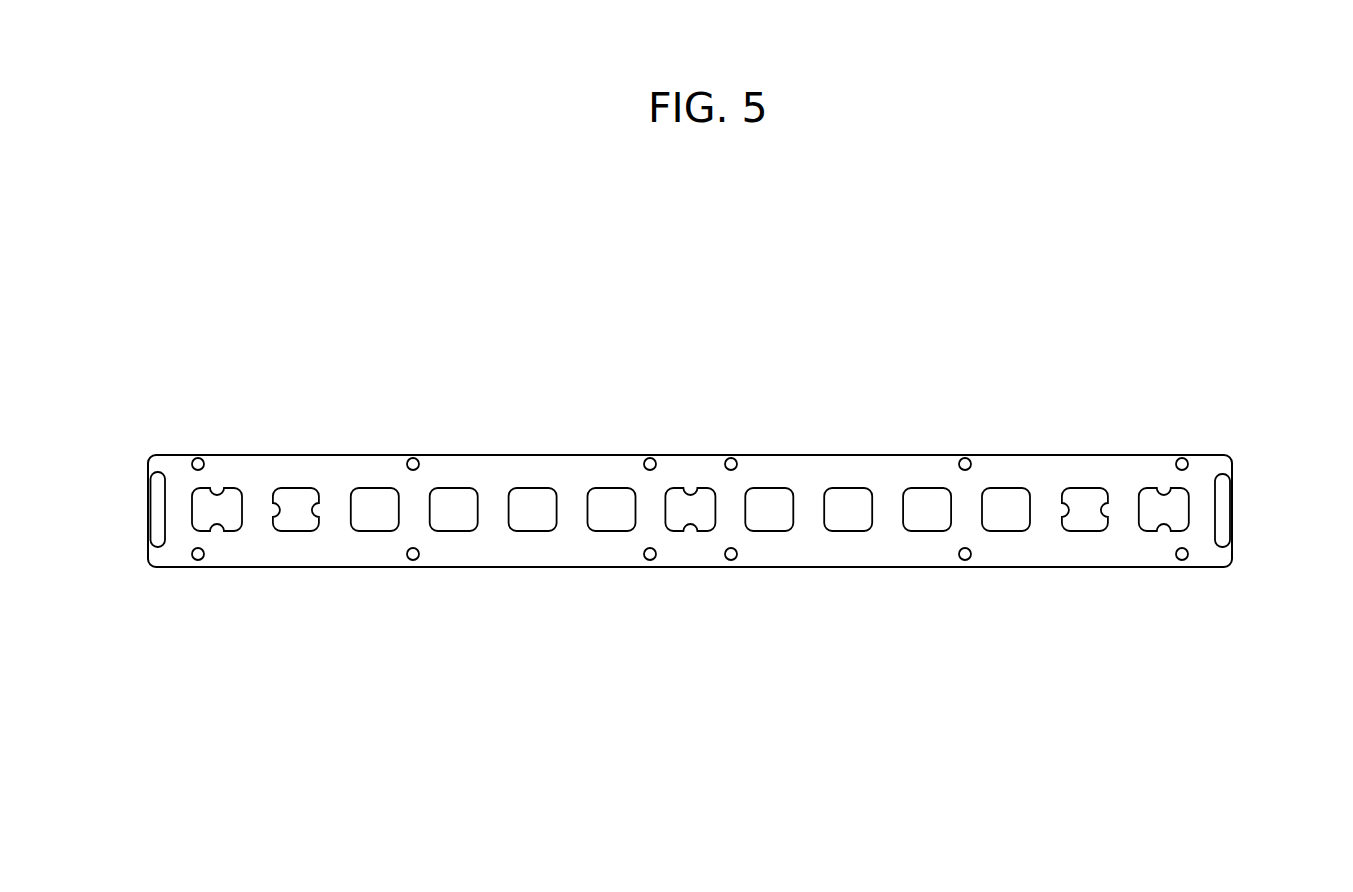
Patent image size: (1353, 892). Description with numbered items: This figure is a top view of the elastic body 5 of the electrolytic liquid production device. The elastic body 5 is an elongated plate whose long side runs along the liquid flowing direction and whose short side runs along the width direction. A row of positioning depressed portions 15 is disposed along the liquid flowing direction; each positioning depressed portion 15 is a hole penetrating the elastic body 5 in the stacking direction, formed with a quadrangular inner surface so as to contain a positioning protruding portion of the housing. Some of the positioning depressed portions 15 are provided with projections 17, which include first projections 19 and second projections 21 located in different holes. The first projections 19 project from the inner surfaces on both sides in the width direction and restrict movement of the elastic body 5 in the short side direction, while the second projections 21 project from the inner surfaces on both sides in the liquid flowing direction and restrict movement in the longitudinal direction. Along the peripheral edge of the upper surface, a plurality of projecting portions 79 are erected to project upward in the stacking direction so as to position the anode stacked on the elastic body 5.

The elastic body 5 is at (512, 390).
The positioning depressed portion 15 is at (706, 510).
The projection 17 is at (713, 510).
The first projection 19 is at (218, 527).
The second projection 21 is at (702, 570).
The projecting portion 79 is at (159, 495).